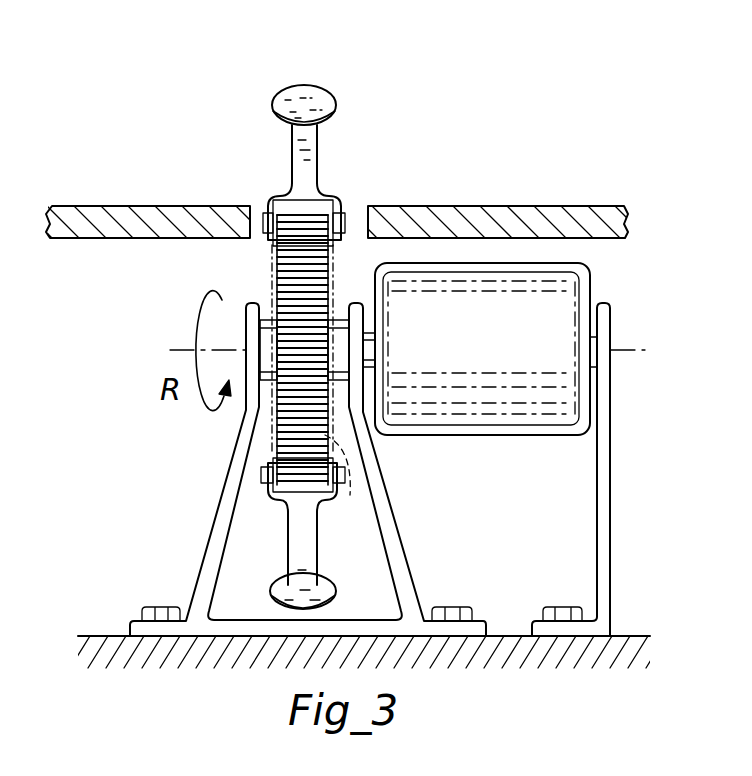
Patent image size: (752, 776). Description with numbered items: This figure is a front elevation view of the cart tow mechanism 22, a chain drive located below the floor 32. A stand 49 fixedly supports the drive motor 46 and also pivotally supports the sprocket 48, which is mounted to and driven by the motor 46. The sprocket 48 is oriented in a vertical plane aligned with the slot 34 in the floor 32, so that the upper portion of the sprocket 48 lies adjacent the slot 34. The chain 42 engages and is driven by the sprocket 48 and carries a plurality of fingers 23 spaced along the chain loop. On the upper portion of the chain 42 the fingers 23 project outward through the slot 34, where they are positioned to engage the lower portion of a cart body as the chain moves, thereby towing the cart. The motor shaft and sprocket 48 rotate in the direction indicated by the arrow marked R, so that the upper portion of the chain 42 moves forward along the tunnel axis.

The cart tow mechanism 22 is at (428, 118).
The fingers 23 is at (334, 116).
The floor 32 is at (120, 205).
The slot 34 is at (254, 200).
The chain 42 is at (273, 279).
The drive motor 46 is at (500, 350).
The sprocket 48 is at (330, 291).
The stand 49 is at (210, 538).